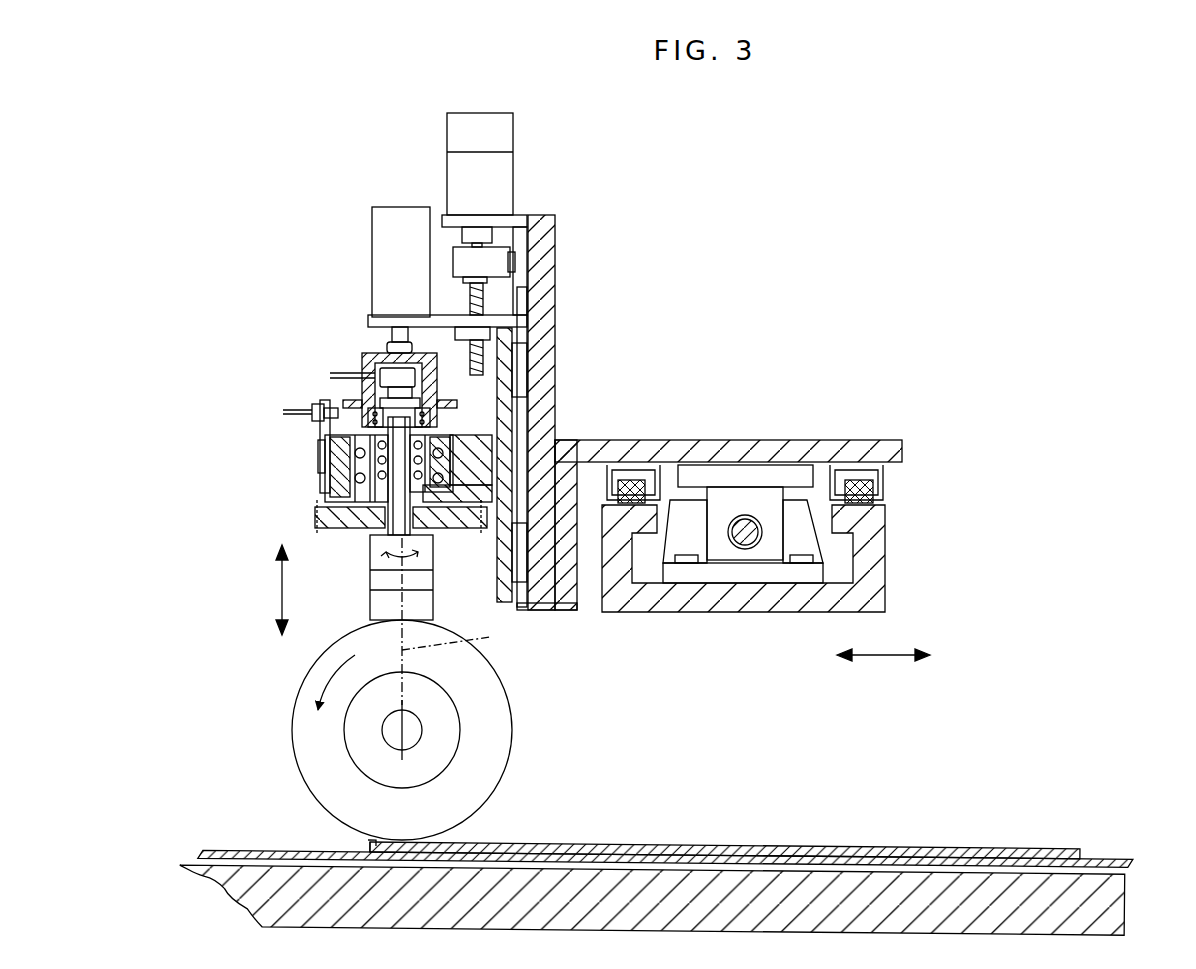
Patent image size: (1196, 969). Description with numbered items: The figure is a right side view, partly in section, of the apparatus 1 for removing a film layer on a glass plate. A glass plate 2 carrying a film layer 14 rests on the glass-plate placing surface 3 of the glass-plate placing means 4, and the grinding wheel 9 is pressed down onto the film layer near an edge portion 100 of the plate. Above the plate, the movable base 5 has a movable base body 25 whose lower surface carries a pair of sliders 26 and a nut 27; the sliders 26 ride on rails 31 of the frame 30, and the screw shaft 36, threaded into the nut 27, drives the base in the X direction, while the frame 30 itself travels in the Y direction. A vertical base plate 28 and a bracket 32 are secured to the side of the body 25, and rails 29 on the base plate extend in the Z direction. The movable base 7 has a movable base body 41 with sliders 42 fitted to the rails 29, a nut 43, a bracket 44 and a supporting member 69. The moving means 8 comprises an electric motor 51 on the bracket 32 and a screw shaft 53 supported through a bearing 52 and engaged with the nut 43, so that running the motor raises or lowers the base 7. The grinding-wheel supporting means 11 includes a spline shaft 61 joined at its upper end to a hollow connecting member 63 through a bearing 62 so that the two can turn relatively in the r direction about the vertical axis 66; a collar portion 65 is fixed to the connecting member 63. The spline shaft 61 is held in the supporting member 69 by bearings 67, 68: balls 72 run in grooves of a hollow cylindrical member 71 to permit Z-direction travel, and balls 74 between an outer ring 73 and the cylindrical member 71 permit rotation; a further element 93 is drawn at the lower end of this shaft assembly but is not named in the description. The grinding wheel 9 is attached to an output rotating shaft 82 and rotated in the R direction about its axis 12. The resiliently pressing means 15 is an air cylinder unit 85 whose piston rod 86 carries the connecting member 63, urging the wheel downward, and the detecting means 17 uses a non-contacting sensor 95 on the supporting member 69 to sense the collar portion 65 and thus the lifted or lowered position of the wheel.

The apparatus for removing a film layer on a glass plate 1 is at (790, 288).
The glass plate 2 is at (917, 846).
The glass-plate placing surface 3 is at (757, 856).
The glass-plate placing means 4 is at (1130, 914).
The movable base 5 is at (780, 440).
The movable base 7 is at (543, 490).
The moving means 8 is at (503, 164).
The grinding wheel 9 is at (398, 730).
The grinding-wheel supporting means 11 is at (368, 570).
The axis 12 is at (400, 730).
The film layer 14 is at (824, 856).
The resiliently pressing means 15 is at (357, 262).
The detecting means 17 is at (282, 426).
The movable base body 25 is at (705, 452).
The sliders 26 is at (630, 468).
The nut 27 is at (745, 478).
The vertical base plate 28 is at (540, 302).
The rails 29 is at (520, 325).
The frame 30 is at (722, 600).
The rails 31 is at (637, 484).
The bracket 32 is at (460, 219).
The screw shaft 36 is at (748, 548).
The movable base body 41 is at (512, 382).
The sliders 42 is at (505, 366).
The nut 43 is at (530, 340).
The bracket 44 is at (376, 322).
The electric motor 51 is at (497, 133).
The bearing 52 is at (495, 255).
The screw shaft 53 is at (480, 292).
The spline shaft 61 is at (343, 483).
The bearing 62 is at (380, 400).
The hollow connecting member 63 is at (381, 376).
The collar portion 65 is at (522, 408).
The vertical axis 66 is at (525, 738).
The bearing 67 is at (325, 436).
The bearing 68 is at (352, 490).
The supporting member 69 is at (527, 432).
The hollow cylindrical member 71 is at (362, 505).
The balls 72 is at (440, 452).
The outer ring 73 is at (352, 480).
The balls 74 is at (345, 455).
The output rotating shaft 82 is at (420, 742).
The air cylinder unit 85 is at (388, 233).
The piston rod 86 is at (395, 334).
The spindle shaft 93 is at (368, 546).
The non-contacting sensor 95 is at (292, 410).
The edge portion 100 is at (368, 845).
The r direction r is at (420, 556).
The R direction R is at (330, 675).
The Z direction Z is at (280, 585).
The Y direction Y is at (885, 656).